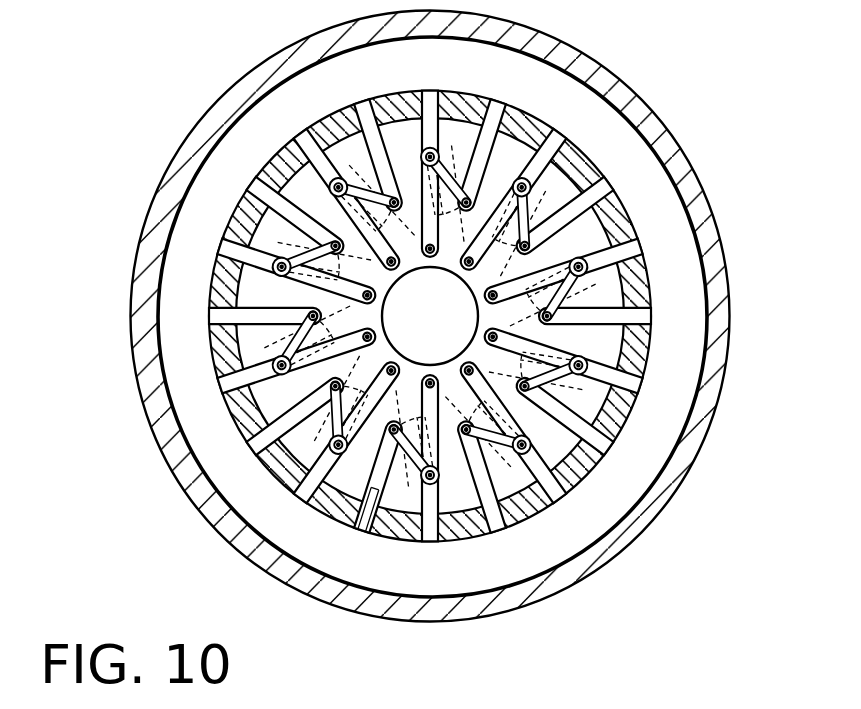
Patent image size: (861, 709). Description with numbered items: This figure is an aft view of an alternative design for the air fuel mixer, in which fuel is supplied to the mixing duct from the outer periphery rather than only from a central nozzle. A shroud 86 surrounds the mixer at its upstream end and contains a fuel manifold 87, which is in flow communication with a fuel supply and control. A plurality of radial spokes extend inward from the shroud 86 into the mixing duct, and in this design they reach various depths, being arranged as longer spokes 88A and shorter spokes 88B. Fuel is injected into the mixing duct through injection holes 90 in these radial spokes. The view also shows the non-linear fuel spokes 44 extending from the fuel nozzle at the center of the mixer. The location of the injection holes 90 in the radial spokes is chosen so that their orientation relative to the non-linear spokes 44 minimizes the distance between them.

The shroud 86 is at (718, 341).
The fuel manifold 87 is at (686, 260).
The non-linear fuel spokes 44 is at (558, 180).
The longer spokes 88A is at (430, 112).
The shorter spokes 88B is at (368, 120).
The injection holes 90 is at (434, 157).